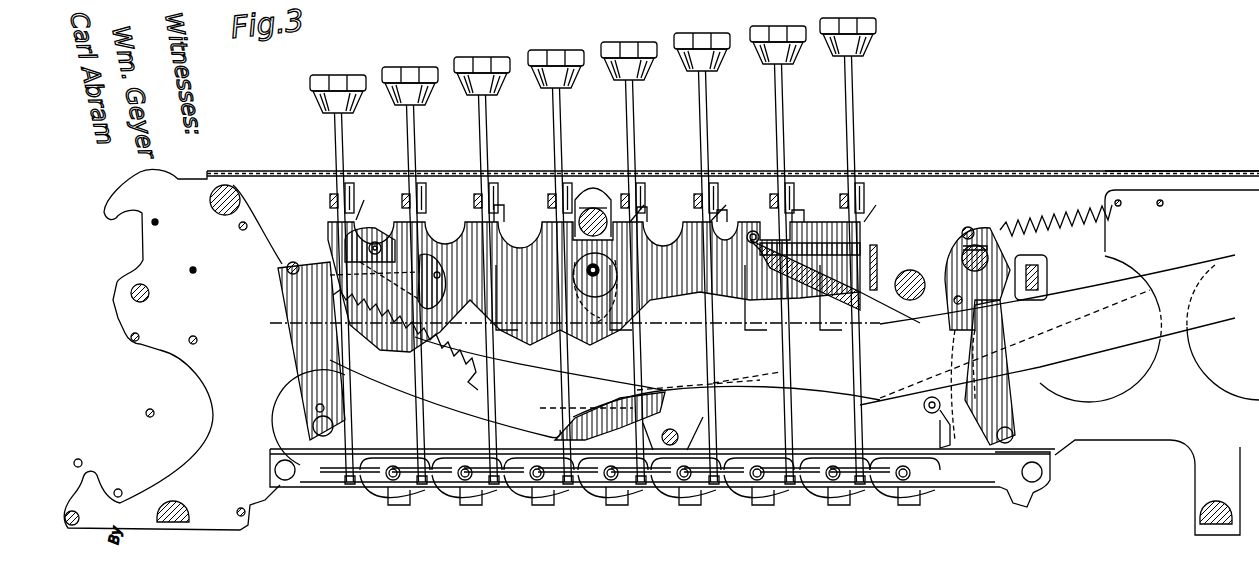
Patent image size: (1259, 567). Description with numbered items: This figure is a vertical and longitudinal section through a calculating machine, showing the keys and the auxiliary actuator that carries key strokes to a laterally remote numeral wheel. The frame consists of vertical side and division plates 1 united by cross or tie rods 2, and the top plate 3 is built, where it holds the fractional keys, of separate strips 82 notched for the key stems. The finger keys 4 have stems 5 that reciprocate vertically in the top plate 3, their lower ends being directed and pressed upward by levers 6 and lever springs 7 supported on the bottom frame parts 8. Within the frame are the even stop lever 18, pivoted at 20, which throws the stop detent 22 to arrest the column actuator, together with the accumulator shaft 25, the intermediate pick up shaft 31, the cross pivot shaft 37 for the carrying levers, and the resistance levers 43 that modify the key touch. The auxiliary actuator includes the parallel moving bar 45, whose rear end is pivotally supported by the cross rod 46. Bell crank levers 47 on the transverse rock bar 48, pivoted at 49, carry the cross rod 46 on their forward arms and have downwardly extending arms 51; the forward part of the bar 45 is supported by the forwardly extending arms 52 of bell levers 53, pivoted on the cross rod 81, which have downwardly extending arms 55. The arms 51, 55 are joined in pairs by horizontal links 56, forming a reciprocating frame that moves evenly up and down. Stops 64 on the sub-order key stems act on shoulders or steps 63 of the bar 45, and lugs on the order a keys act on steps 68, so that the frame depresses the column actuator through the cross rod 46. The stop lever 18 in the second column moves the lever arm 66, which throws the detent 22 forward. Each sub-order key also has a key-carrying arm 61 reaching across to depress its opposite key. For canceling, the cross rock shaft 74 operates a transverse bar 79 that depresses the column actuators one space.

The frame plates 1 is at (182, 180).
The cross or tie rods 2 is at (228, 188).
The top plate 3 is at (276, 170).
The finger keys 4 is at (440, 68).
The key stems 5 is at (418, 145).
The levers 6 is at (338, 478).
The lever springs 7 is at (465, 500).
The bottom frame parts 8 is at (444, 449).
The even stop lever 18 is at (447, 255).
The stop lever pivot 20 is at (288, 260).
The stop detent 22 is at (333, 426).
The accumulator shaft 25 is at (197, 337).
The intermediate pick up shaft 31 is at (131, 294).
The cross pivot shaft 37 is at (130, 339).
The resistance levers 43 is at (960, 230).
The parallel moving bar 45 is at (506, 260).
The cross rod 46 is at (752, 260).
The bell crank levers 47 is at (986, 310).
The transverse rock bar 48 is at (1038, 276).
The rock bar pivot 49 is at (1048, 258).
The downwardly extending arm 51 is at (1010, 406).
The forwardly extending arm 52 is at (377, 240).
The bell levers 53 is at (595, 300).
The downwardly extending arm 55 is at (560, 402).
The horizontal links 56 is at (720, 410).
The key-carrying arm 61 is at (326, 198).
The shoulders or steps 63 is at (506, 226).
The stops 64 is at (625, 200).
The lever arm 66 is at (418, 282).
The shoulders or steps 68 is at (747, 215).
The cross rock shaft 74 is at (910, 270).
The transverse bar 79 is at (876, 248).
The cross rod 81 is at (595, 275).
The separate strips 82 is at (525, 176).